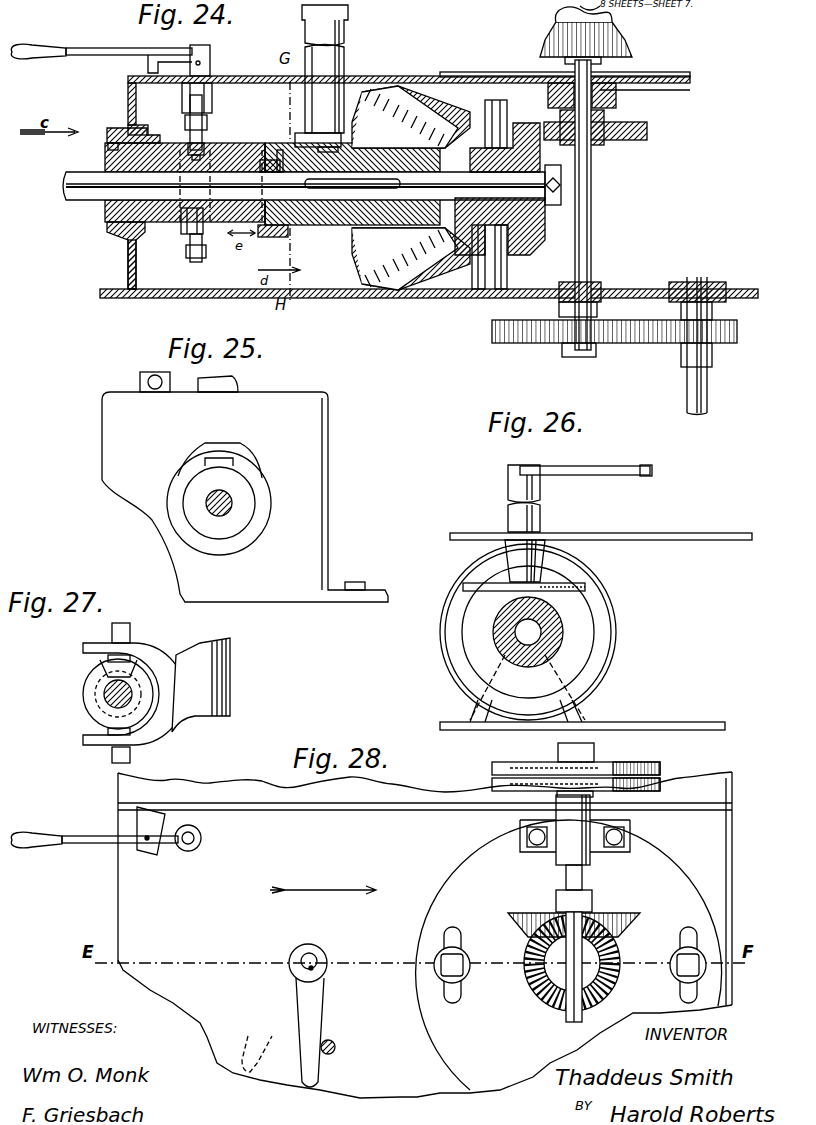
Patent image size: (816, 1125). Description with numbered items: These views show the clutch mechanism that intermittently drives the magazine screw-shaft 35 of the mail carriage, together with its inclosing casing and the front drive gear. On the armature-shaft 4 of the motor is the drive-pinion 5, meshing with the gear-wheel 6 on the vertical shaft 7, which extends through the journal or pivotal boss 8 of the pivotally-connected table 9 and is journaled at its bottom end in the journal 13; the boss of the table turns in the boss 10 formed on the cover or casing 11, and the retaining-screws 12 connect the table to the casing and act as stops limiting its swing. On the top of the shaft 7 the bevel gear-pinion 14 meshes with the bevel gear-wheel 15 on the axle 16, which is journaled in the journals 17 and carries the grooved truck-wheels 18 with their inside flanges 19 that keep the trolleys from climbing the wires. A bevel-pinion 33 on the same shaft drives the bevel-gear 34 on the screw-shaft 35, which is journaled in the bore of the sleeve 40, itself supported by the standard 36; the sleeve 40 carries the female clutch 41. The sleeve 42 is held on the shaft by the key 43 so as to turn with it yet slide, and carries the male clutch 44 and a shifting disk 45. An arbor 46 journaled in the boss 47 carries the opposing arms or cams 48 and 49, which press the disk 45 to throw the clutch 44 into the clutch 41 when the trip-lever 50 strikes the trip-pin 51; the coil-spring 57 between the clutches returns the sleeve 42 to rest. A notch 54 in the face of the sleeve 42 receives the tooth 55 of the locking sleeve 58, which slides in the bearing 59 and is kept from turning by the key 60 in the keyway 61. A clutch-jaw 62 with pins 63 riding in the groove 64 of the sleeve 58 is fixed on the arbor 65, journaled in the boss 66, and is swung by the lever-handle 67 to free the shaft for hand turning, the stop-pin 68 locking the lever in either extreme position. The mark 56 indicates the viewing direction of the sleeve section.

In FIG. 24, the armature-shaft 4 is at (698, 282).
In FIG. 24, the drive-pinion 5 is at (722, 345).
In FIG. 24, the gear-wheel 6 is at (492, 335).
In FIG. 24, the vertical shaft 7 is at (591, 258).
In FIG. 24, the journal or pivotal boss 8 is at (548, 92).
In FIG. 24, the pivotally-connected table 9 is at (672, 74).
In FIG. 28, the pivotally-connected table 9 is at (569, 955).
In FIG. 24, the boss 10 is at (616, 98).
In FIG. 24, the cover or casing 11 is at (408, 80).
In FIG. 25, the cover or casing 11 is at (245, 497).
In FIG. 27, the cover or casing 11 is at (156, 691).
In FIG. 28, the cover or casing 11 is at (425, 935).
In FIG. 28, the retaining-screws 12 is at (462, 980).
In FIG. 24, the journal 13 is at (602, 292).
In FIG. 24, the bevel gear-pinion 14 is at (628, 50).
In FIG. 28, the bevel gear-pinion 14 is at (622, 963).
In FIG. 24, the bevel gear-wheel 15 is at (540, 46).
In FIG. 28, the bevel gear-wheel 15 is at (640, 920).
In FIG. 28, the axle 16 is at (566, 1010).
In FIG. 28, the journals 17 is at (568, 842).
In FIG. 28, the truck-wheels 18 is at (645, 768).
In FIG. 28, the peripheral inside faced flanges 19 is at (500, 776).
In FIG. 24, the bevel-pinion 33 is at (645, 136).
In FIG. 24, the bevel-gear 34 is at (532, 248).
In FIG. 24, the magazine screw-shaft 35 is at (78, 200).
In FIG. 25, the magazine screw-shaft 35 is at (210, 508).
In FIG. 26, the magazine screw-shaft 35 is at (490, 636).
In FIG. 24, the standard 36 is at (488, 255).
In FIG. 26, the standard 36 is at (570, 708).
In FIG. 24, the sleeve 40 is at (495, 134).
In FIG. 24, the female clutch 41 is at (452, 124).
In FIG. 24, the sleeve 42 is at (318, 226).
In FIG. 24, the key 43 is at (277, 265).
In FIG. 24, the male clutch 44 is at (294, 177).
In FIG. 26, the male clutch 44 is at (612, 632).
In FIG. 24, the shifting disk 45 is at (352, 264).
In FIG. 26, the shifting disk 45 is at (582, 612).
In FIG. 24, the arbor 46 is at (345, 10).
In FIG. 26, the arbor 46 is at (538, 468).
In FIG. 28, the arbor 46 is at (316, 958).
In FIG. 24, the boss 47 is at (298, 98).
In FIG. 26, the boss 47 is at (565, 552).
In FIG. 26, the arm or cam 48 is at (490, 586).
In FIG. 24, the arm or cam 49 is at (318, 138).
In FIG. 26, the arm or cam 49 is at (580, 588).
In FIG. 28, the trip-lever 50 is at (310, 1012).
In FIG. 28, the trip-pin 51 is at (336, 1050).
In FIG. 24, the clutch-tooth-receiving notch or recess 54 is at (280, 150).
In FIG. 24, the tooth 55 is at (266, 160).
In FIG. 27, the tooth 55 is at (116, 666).
In FIG. 24, the sleeve 56 is at (255, 236).
In FIG. 24, the coil-spring 57 is at (482, 135).
In FIG. 24, the retaining or locking sleeve 58 is at (118, 160).
In FIG. 25, the retaining or locking sleeve 58 is at (248, 505).
In FIG. 27, the retaining or locking sleeve 58 is at (92, 690).
In FIG. 24, the bearing 59 is at (112, 236).
In FIG. 25, the bearing 59 is at (255, 538).
In FIG. 24, the key 60 is at (155, 137).
In FIG. 25, the key 60 is at (235, 468).
In FIG. 24, the keyway 61 is at (108, 146).
In FIG. 25, the keyway 61 is at (212, 452).
In FIG. 25, the clutch-jaw 62 is at (155, 382).
In FIG. 27, the clutch-jaw 62 is at (83, 647).
In FIG. 24, the engaging pins 63 is at (206, 140).
In FIG. 24, the groove or recess 64 is at (206, 152).
In FIG. 24, the arbor 65 is at (205, 48).
In FIG. 28, the arbor 65 is at (186, 848).
In FIG. 24, the boss 66 is at (182, 90).
In FIG. 24, the lever-handle 67 is at (105, 38).
In FIG. 28, the lever-handle 67 is at (88, 843).
In FIG. 24, the stop-pin or lever-retaining pin 68 is at (150, 56).
In FIG. 28, the stop-pin or lever-retaining pin 68 is at (145, 845).